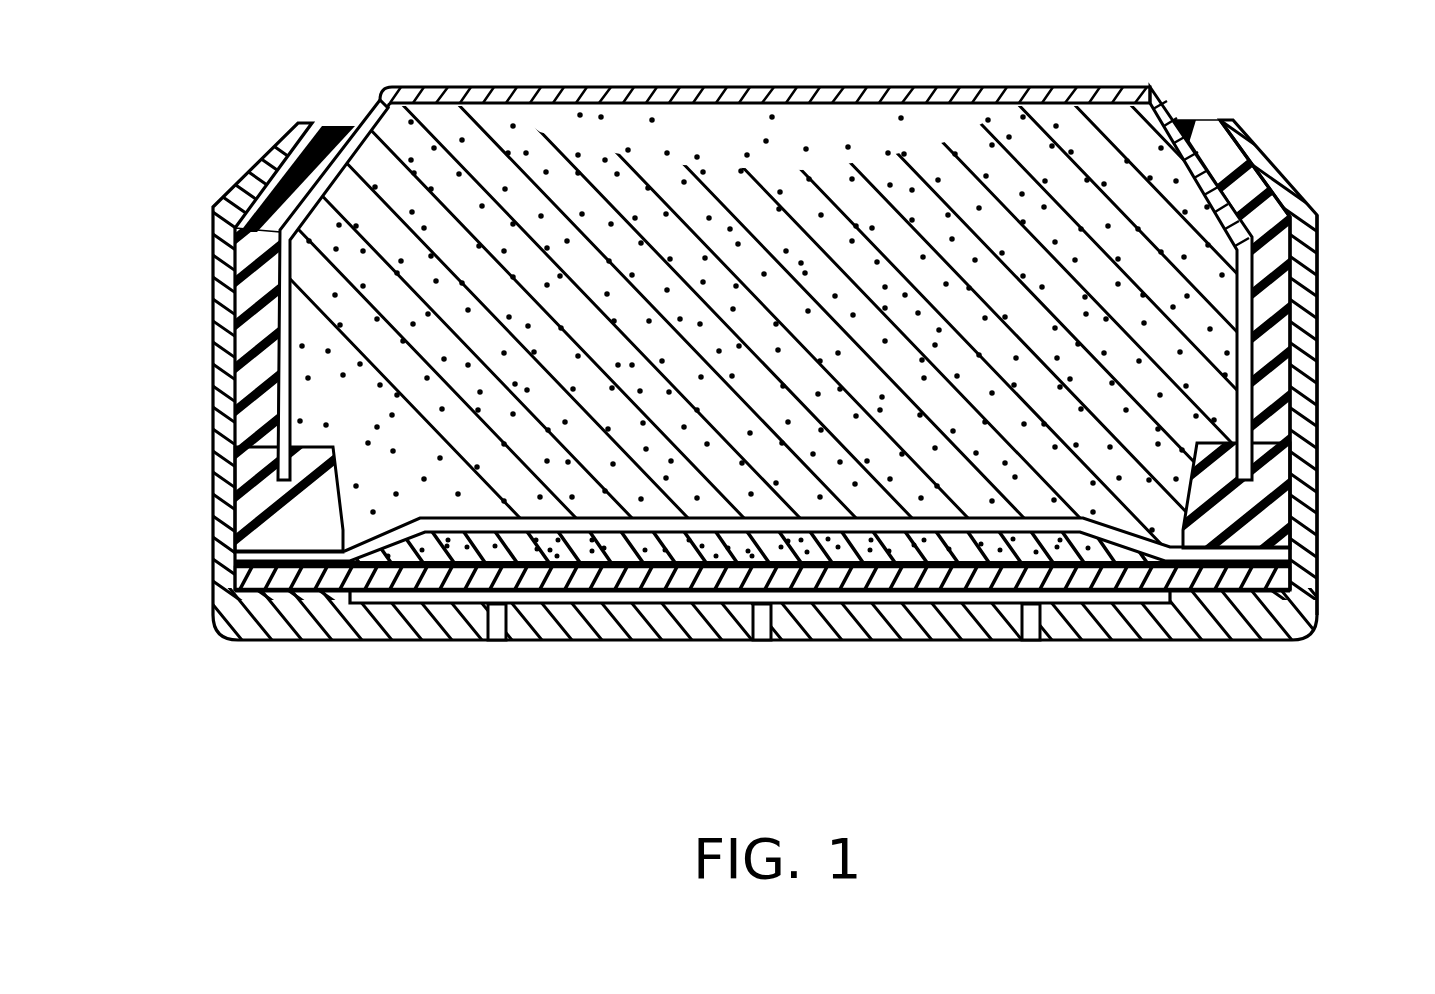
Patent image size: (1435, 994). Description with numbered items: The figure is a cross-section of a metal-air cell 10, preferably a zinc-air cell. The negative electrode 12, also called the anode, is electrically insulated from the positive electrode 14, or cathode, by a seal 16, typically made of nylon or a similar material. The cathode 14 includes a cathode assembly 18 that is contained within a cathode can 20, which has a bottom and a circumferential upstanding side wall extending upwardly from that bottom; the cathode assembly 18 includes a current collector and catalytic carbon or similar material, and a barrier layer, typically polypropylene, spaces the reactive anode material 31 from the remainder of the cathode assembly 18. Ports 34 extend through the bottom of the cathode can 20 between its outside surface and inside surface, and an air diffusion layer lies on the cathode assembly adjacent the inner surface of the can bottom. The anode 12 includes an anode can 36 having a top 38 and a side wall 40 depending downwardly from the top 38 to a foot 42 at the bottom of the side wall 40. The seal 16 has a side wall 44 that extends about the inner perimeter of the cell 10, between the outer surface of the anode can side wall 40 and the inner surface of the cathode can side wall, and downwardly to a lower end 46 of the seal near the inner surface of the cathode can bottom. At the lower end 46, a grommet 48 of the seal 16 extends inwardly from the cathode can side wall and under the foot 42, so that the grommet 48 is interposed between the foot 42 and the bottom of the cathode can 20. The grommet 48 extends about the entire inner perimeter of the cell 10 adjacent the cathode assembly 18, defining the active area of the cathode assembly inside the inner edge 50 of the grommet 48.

The metal-air cell 10 is at (1310, 118).
The negative electrode 12 is at (947, 78).
The positive electrode 14 is at (1323, 595).
The seal 16 is at (1290, 242).
The cathode assembly 18 is at (580, 552).
The cathode can 20 is at (1296, 512).
The reactive anode material 31 is at (650, 200).
The ports 34 is at (1030, 641).
The anode can 36 is at (460, 82).
The top 38 is at (575, 87).
The side wall 40 is at (262, 300).
The foot 42 is at (272, 470).
The side wall 44 is at (1280, 398).
The lower end 46 is at (220, 538).
The grommet 48 is at (285, 545).
The inner edge 50 is at (433, 542).